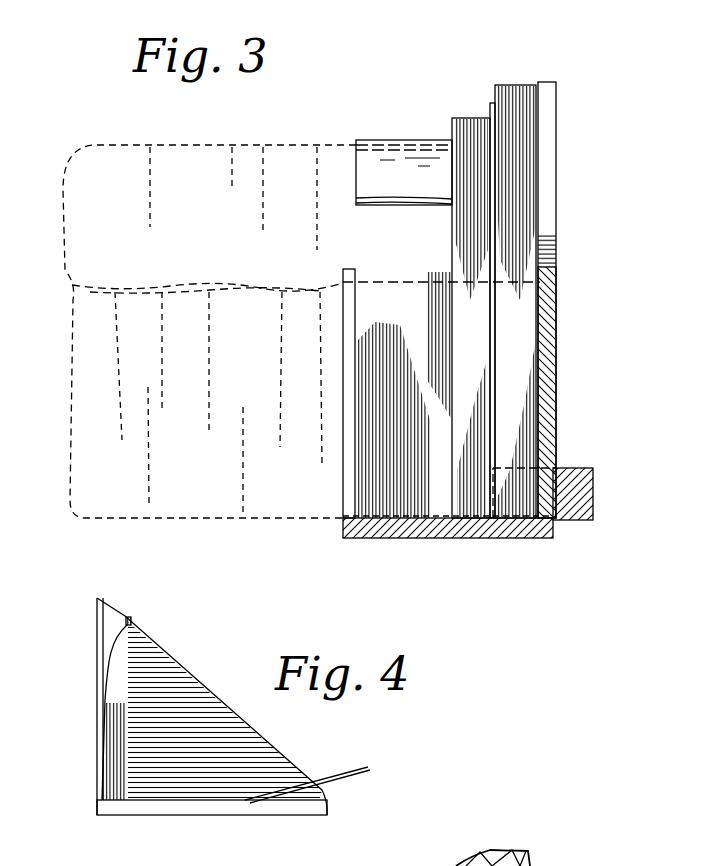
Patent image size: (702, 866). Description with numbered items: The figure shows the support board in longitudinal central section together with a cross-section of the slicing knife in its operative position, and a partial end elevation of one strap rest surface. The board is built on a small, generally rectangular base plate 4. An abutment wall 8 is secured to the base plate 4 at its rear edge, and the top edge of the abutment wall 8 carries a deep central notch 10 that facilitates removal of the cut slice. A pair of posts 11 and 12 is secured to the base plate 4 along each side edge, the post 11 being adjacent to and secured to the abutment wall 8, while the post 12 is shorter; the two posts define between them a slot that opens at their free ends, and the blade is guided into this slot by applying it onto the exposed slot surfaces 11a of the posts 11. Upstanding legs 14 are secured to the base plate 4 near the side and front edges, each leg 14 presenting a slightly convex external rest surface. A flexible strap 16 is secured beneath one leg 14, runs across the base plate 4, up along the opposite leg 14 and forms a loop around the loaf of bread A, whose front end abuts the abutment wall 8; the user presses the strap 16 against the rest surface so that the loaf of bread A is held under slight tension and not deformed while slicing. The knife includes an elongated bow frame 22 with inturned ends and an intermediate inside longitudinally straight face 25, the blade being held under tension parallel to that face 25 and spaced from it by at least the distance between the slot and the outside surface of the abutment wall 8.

In FIG. 3, the loaf of bread A is at (260, 517).
In FIG. 3, the base plate 4 is at (505, 530).
In FIG. 4, the base plate 4 is at (170, 807).
In FIG. 3, the abutment wall 8 is at (545, 360).
In FIG. 4, the abutment wall 8 is at (195, 703).
In FIG. 3, the central notch 10 is at (548, 205).
In FIG. 3, the post 11 is at (507, 97).
In FIG. 3, the slot surface 11a is at (495, 105).
In FIG. 3, the post 12 is at (462, 120).
In FIG. 3, the upstanding leg 14 is at (388, 410).
In FIG. 4, the upstanding leg 14 is at (113, 722).
In FIG. 3, the flexible strap 16 is at (383, 160).
In FIG. 4, the flexible strap 16 is at (367, 775).
In FIG. 3, the bow frame 22 is at (582, 520).
In FIG. 3, the inside longitudinally straight face 25 is at (552, 520).